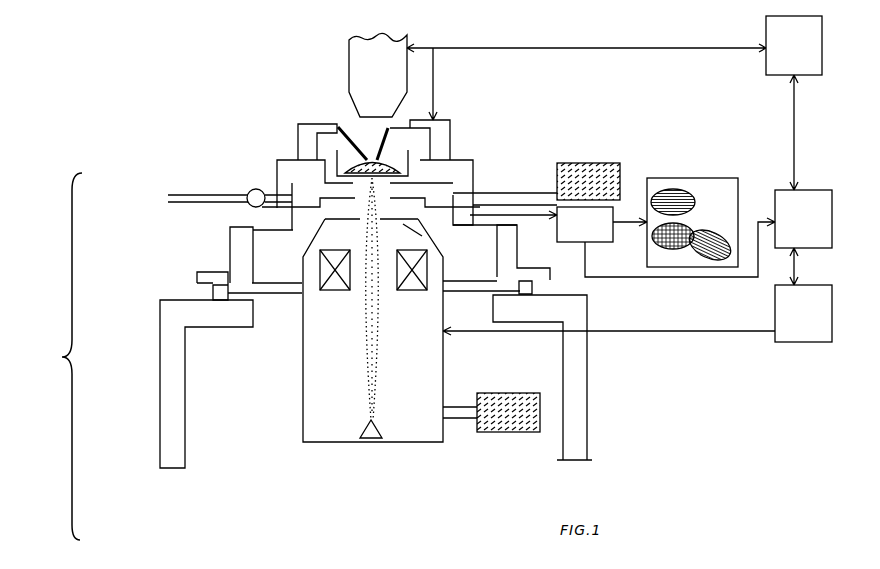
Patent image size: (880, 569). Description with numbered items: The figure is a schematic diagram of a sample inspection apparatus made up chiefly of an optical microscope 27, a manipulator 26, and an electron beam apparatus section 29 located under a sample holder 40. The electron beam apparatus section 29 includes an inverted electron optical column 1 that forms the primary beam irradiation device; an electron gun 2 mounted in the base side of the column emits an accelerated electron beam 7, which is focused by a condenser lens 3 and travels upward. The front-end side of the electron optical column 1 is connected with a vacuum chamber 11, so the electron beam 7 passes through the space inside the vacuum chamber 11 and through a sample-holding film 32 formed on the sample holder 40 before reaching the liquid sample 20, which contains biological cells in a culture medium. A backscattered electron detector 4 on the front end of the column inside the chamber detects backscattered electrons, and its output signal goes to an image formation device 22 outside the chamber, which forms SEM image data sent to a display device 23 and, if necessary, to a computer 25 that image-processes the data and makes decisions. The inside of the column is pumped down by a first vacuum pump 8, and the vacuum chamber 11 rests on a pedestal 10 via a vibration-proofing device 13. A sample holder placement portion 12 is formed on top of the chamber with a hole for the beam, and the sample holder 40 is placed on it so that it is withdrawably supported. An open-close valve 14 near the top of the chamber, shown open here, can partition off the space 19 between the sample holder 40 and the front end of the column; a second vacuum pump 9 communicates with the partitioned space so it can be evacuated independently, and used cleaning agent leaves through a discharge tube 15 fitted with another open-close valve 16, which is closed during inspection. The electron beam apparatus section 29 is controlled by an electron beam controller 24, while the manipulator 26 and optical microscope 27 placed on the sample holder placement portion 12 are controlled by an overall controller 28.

The electron optical column 1 is at (303, 425).
The electron gun 2 is at (360, 437).
The condenser lens 3 is at (330, 277).
The backscattered electron detector 4 is at (350, 224).
The electron beam 7 is at (373, 378).
The first vacuum pump 8 is at (502, 432).
The second vacuum pump 9 is at (590, 163).
The pedestal 10 is at (160, 455).
The vacuum chamber 11 is at (263, 267).
The sample holder placement portion 12 is at (277, 163).
The vibration-proofing device 13 is at (217, 293).
The open-close valve 14 is at (427, 207).
The discharge tube 15 is at (172, 195).
The open-close valve 16 is at (247, 192).
The space 19 is at (385, 157).
The liquid sample 20 is at (350, 127).
The image formation device 22 is at (622, 242).
The display device 23 is at (720, 178).
The electron beam controller 24 is at (637, 313).
The computer 25 is at (803, 237).
The manipulator 26 is at (432, 124).
The optical microscope 27 is at (378, 75).
The overall controller 28 is at (614, 103).
The electron beam apparatus section 29 is at (52, 356).
The sample-holding film 32 is at (413, 193).
The sample holder 40 is at (313, 152).